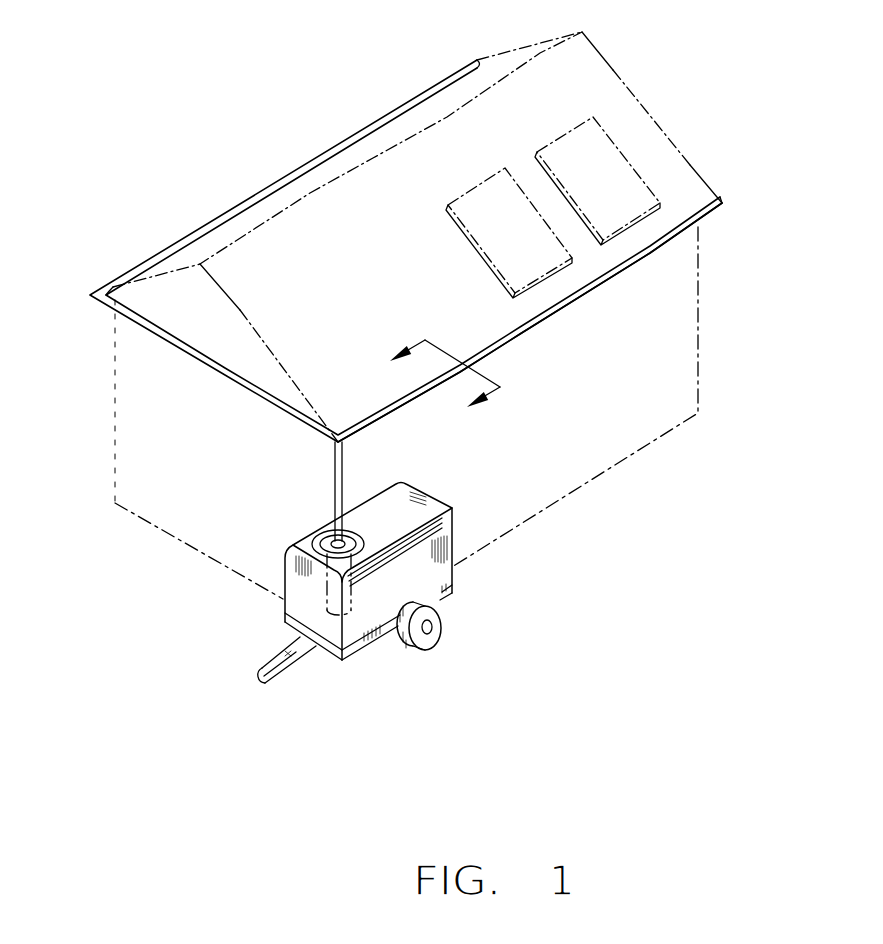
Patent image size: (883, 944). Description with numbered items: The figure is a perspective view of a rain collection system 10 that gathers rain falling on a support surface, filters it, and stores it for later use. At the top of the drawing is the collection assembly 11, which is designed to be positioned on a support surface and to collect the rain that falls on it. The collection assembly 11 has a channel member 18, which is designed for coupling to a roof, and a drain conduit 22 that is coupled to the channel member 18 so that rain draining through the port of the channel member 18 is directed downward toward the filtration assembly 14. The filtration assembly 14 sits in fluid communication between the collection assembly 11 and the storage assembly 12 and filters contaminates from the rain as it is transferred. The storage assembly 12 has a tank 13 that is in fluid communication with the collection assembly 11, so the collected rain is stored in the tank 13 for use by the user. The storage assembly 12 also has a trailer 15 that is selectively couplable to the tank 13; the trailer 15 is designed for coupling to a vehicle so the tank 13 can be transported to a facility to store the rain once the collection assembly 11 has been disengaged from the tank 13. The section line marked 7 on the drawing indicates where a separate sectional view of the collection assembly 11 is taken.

The rain collection system 10 is at (473, 307).
The collection assembly 11 is at (616, 274).
The storage assembly 12 is at (390, 632).
The tank 13 is at (440, 571).
The filtration assembly 14 is at (332, 595).
The trailer 15 is at (358, 647).
The channel member 18 is at (672, 237).
The drain conduit 22 is at (335, 471).
The section line 7- 7 is at (430, 395).